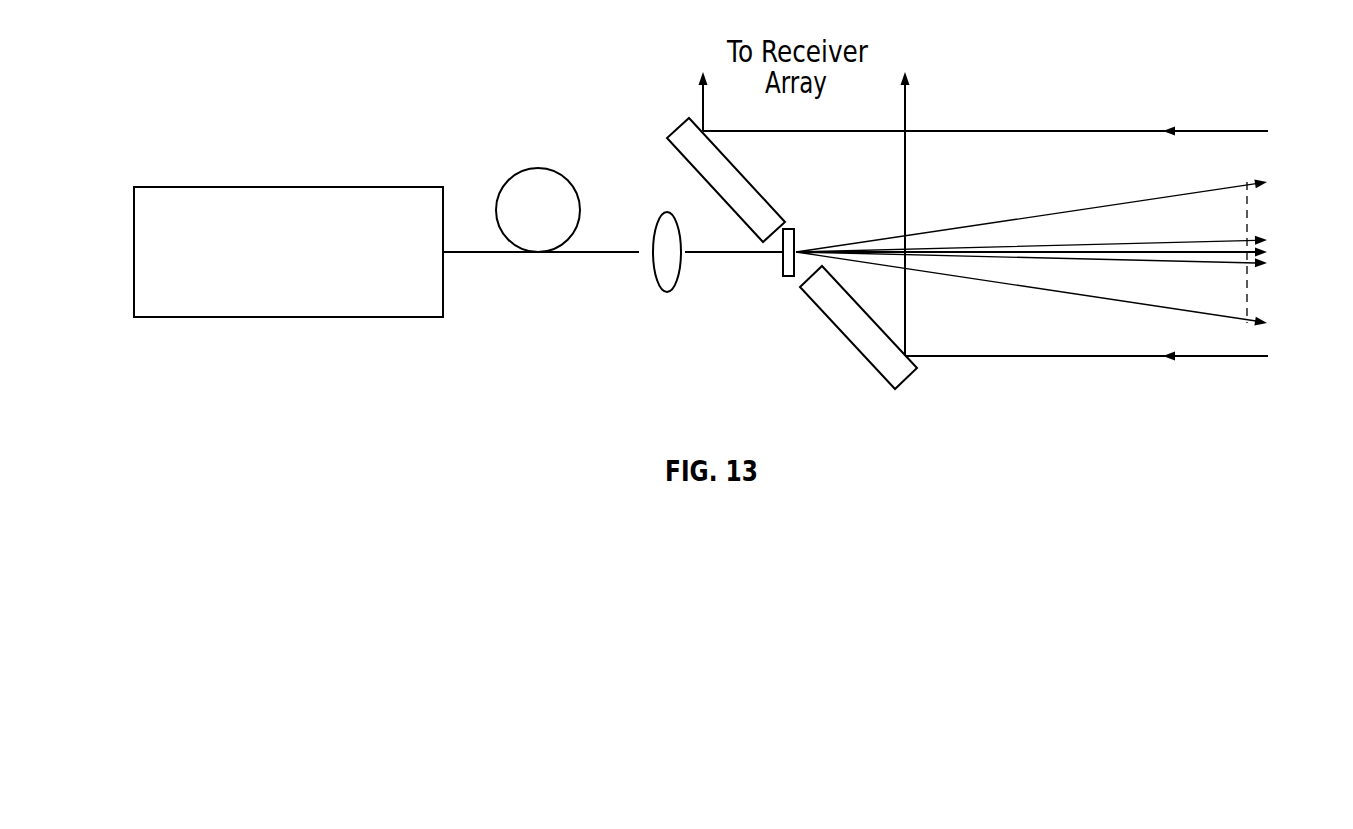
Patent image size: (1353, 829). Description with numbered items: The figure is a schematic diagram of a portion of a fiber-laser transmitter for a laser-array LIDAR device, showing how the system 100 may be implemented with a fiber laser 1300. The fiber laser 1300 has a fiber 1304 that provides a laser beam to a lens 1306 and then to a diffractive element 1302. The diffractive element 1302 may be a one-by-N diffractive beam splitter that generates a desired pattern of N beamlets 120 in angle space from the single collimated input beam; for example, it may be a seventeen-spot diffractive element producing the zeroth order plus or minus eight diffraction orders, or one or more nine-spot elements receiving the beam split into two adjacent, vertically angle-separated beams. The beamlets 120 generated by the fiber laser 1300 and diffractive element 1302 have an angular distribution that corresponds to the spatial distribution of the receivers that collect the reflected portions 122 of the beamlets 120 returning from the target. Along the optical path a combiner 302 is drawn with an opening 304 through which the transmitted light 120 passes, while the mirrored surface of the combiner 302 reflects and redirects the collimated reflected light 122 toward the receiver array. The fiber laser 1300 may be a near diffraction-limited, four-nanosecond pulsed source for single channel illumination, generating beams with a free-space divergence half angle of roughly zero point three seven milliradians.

The system 100 is at (1173, 42).
The light 120 is at (1180, 193).
The reflected light 122 is at (1028, 131).
The combiner 302 is at (903, 385).
The opening 304 is at (805, 215).
The fiber laser 1300 is at (290, 317).
The diffractive element 1302 is at (789, 283).
The fiber 1304 is at (595, 253).
The lens 1306 is at (670, 292).